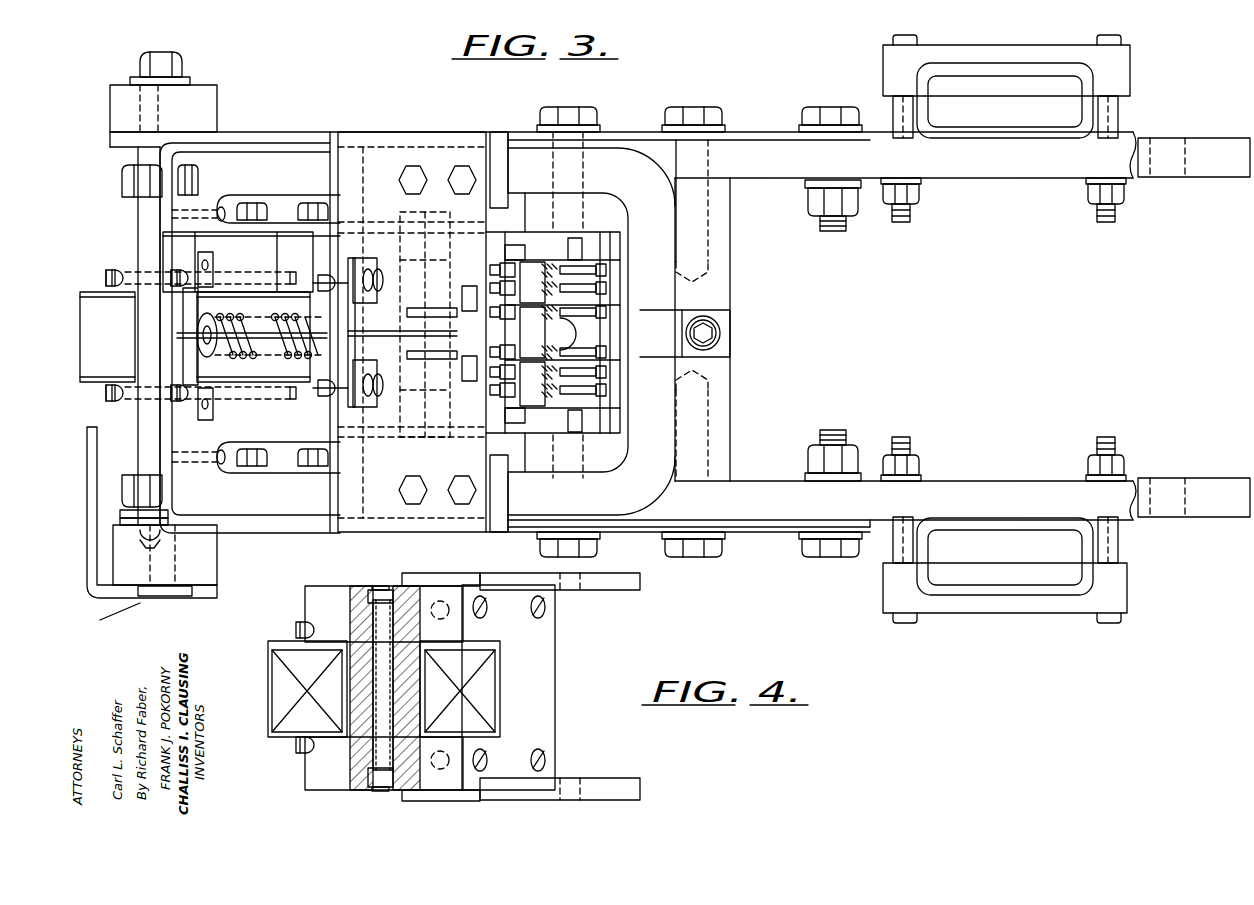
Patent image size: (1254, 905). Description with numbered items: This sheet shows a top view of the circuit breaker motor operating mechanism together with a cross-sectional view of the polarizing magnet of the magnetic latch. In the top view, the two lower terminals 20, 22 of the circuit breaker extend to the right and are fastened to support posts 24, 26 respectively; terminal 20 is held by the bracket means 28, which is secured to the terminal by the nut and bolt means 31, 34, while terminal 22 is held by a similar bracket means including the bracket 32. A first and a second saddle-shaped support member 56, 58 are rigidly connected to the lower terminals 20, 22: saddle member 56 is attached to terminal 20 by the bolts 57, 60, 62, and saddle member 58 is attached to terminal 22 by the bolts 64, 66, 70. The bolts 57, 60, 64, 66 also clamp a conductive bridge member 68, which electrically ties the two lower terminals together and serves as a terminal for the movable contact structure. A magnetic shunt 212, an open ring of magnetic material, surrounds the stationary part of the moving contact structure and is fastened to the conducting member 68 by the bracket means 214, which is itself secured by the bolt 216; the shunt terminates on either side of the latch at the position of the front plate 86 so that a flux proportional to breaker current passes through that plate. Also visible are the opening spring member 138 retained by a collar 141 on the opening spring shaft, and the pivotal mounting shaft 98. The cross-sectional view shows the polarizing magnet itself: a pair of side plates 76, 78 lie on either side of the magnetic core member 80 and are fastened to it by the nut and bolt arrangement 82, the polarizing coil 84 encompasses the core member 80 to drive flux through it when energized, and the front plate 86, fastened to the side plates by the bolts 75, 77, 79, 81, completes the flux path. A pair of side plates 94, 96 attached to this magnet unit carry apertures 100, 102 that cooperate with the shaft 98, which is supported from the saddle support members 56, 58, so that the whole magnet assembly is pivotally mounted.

In FIG. 3, the lower terminal 20 is at (1210, 488).
In FIG. 3, the lower terminal 22 is at (1210, 150).
In FIG. 3, the support post 24 is at (1082, 548).
In FIG. 3, the support post 26 is at (1082, 98).
In FIG. 3, the bracket means 28 is at (1127, 591).
In FIG. 3, the nut and bolt means 31 is at (895, 543).
In FIG. 3, the bracket 32 is at (1120, 62).
In FIG. 3, the nut and bolt means 34 is at (1112, 545).
In FIG. 3, the first saddle-shaped support member 56 is at (515, 535).
In FIG. 3, the bolt 57 is at (590, 548).
In FIG. 3, the second saddle-shaped support member 58 is at (478, 132).
In FIG. 3, the bolt 60 is at (700, 550).
In FIG. 3, the bolt 62 is at (822, 550).
In FIG. 3, the bolt 64 is at (578, 107).
In FIG. 3, the bolt 66 is at (689, 107).
In FIG. 3, the conductive bridge member 68 is at (730, 392).
In FIG. 3, the bolt / movable contact structure 70 is at (818, 107).
In FIG. 4, the bolt 75 is at (296, 628).
In FIG. 4, the side plate 76 is at (313, 590).
In FIG. 4, the bolt 77 is at (439, 620).
In FIG. 4, the side plate 78 is at (315, 775).
In FIG. 4, the bolt 79 is at (296, 746).
In FIG. 4, the magnetic core member 80 is at (385, 688).
In FIG. 4, the bolt 81 is at (434, 751).
In FIG. 4, the fastening nut and bolt arrangement 82 is at (378, 788).
In FIG. 4, the polarizing coil 84 is at (272, 676).
In FIG. 4, the front plate 86 is at (545, 723).
In FIG. 3, the side plate 94 is at (305, 442).
In FIG. 4, the side plate 94 is at (622, 790).
In FIG. 3, the side plate 96 is at (302, 232).
In FIG. 4, the side plate 96 is at (622, 590).
In FIG. 3, the shaft 98 is at (425, 267).
In FIG. 4, the aperture 100 is at (573, 790).
In FIG. 4, the aperture 102 is at (572, 585).
In FIG. 3, the opening spring member 138 is at (246, 352).
In FIG. 3, the collar 141 is at (204, 350).
In FIG. 3, the magnetic shunt 212 is at (668, 250).
In FIG. 3, the bracket means 214 is at (733, 322).
In FIG. 3, the bolt 216 is at (722, 336).